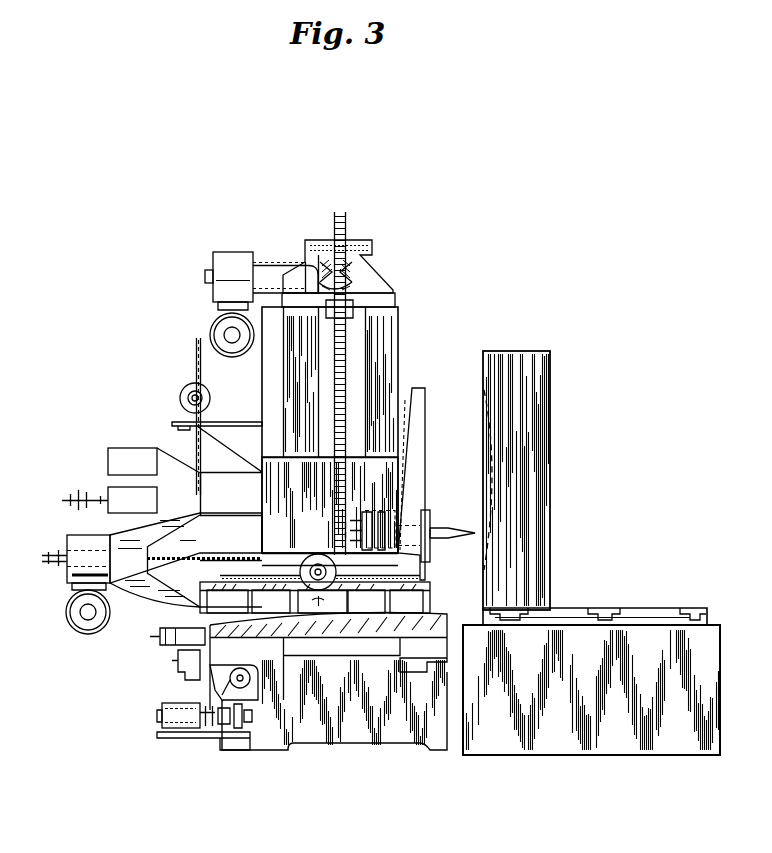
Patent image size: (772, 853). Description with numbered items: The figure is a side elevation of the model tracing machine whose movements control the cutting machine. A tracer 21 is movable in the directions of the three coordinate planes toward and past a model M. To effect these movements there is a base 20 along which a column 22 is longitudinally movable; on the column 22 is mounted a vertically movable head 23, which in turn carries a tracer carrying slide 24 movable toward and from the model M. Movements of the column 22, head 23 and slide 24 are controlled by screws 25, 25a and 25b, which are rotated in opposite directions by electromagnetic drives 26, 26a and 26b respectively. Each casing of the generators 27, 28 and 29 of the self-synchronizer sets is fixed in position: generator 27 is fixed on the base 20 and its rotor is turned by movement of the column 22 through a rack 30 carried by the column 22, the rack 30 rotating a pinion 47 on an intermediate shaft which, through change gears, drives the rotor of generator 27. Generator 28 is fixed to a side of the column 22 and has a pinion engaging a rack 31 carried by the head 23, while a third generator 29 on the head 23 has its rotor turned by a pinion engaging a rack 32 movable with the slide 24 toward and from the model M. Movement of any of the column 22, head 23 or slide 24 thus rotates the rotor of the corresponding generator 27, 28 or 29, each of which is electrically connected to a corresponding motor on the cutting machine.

The base 20 is at (505, 745).
The tracer 21 is at (433, 530).
The column 22 is at (385, 368).
The head 23 is at (300, 473).
The tracer carrying slide 24 is at (403, 558).
The screw 25 is at (170, 565).
The screw 25a is at (220, 682).
The screw 25b is at (347, 338).
The electromagnetic drive 26 is at (68, 542).
The electromagnetic drive 26a is at (215, 678).
The electromagnetic drive 26b is at (220, 290).
The generator 27 is at (160, 702).
The generator 28 is at (210, 398).
The generator 29 is at (306, 580).
The rack 30 is at (255, 706).
The rack 31 is at (196, 368).
The rack 32 is at (392, 583).
The pinion 47 is at (248, 730).
The model M is at (530, 480).